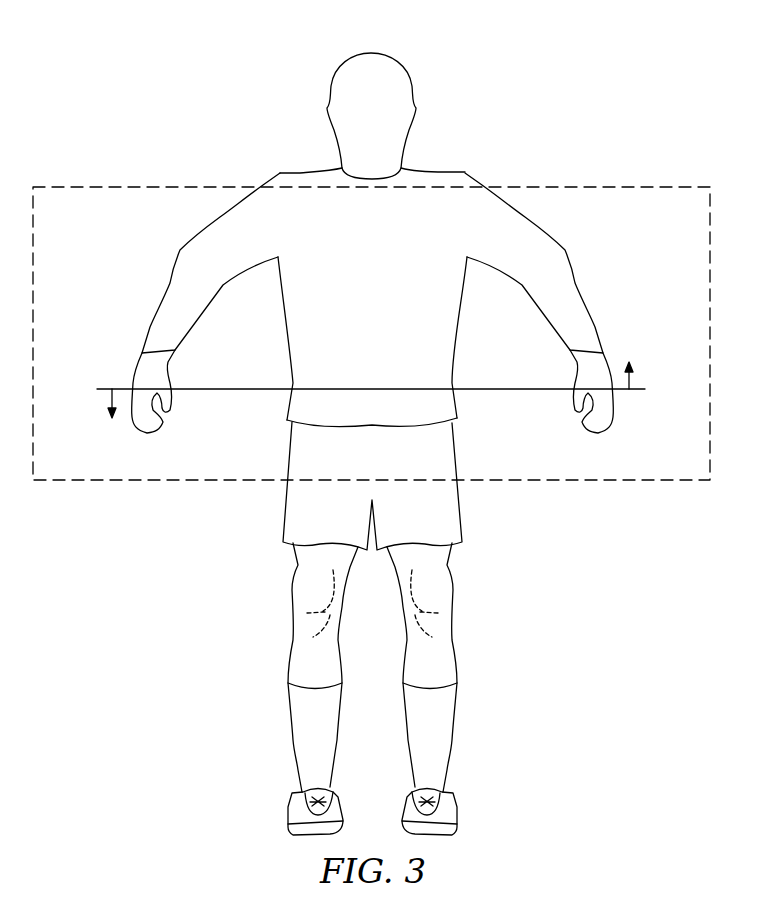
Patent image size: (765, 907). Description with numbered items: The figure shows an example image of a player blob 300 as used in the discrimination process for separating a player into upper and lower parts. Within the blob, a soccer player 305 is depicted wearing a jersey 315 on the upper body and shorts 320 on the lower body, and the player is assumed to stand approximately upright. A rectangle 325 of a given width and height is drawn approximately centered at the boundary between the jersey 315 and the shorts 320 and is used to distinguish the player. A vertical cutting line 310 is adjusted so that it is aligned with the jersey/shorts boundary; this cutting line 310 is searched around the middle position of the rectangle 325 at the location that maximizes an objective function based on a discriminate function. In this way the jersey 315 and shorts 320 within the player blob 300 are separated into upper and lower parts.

The player blob 300 is at (225, 62).
The soccer player 305 is at (443, 95).
The vertical cutting line 310 is at (645, 382).
The jersey 315 is at (472, 240).
The shorts 320 is at (433, 532).
The rectangle 325 is at (630, 182).